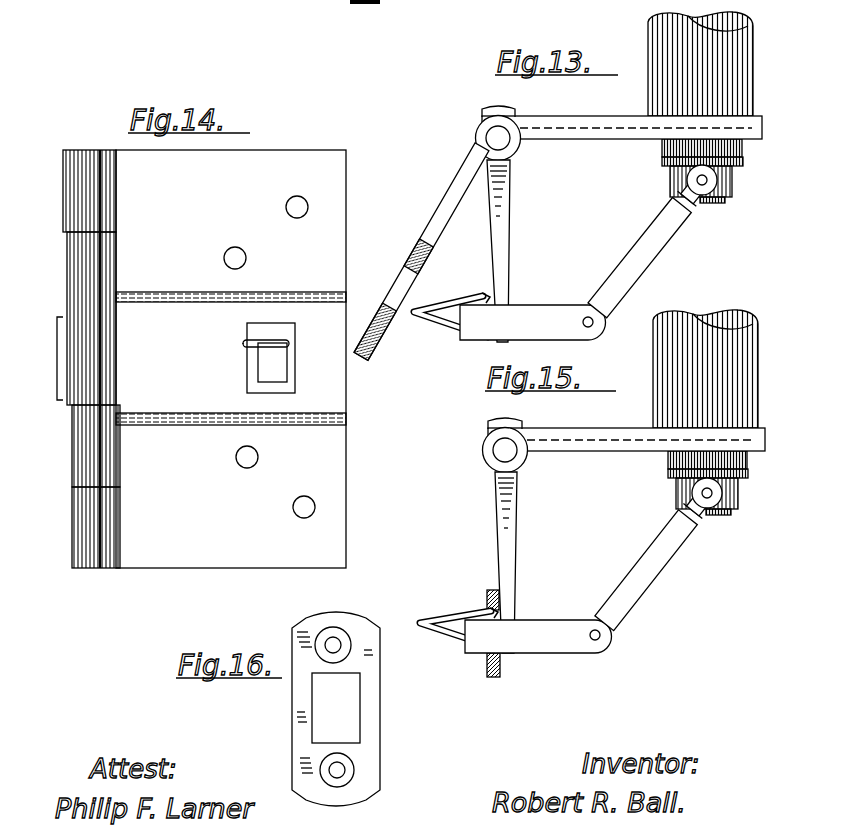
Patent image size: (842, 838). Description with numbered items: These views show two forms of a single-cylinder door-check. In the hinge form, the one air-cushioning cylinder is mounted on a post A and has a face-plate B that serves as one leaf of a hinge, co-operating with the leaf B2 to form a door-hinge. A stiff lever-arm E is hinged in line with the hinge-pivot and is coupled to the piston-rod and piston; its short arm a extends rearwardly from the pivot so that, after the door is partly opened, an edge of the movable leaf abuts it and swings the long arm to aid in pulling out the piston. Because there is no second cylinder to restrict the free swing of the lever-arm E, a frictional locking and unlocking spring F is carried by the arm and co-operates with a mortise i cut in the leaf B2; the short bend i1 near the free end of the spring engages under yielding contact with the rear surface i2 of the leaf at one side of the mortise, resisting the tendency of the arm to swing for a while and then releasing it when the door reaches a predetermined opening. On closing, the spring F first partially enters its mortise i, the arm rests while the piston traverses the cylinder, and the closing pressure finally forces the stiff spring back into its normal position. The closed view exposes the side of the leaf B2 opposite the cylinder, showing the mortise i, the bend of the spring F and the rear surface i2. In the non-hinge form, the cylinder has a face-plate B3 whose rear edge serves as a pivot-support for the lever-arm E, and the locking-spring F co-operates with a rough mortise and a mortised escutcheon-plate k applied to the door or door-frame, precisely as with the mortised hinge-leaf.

In FIG. 13, the post or standard A is at (700, 107).
In FIG. 15, the post or standard A is at (705, 412).
In FIG. 14, the short arm a is at (60, 319).
In FIG. 13, the short arm a is at (502, 113).
In FIG. 13, the face-plate B is at (607, 125).
In FIG. 14, the leaf B2 is at (204, 359).
In FIG. 13, the leaf B2 is at (421, 252).
In FIG. 15, the face-plate B3 is at (602, 445).
In FIG. 13, the lever-arm E is at (507, 251).
In FIG. 15, the lever-arm E is at (514, 562).
In FIG. 14, the locking-spring F is at (256, 350).
In FIG. 13, the locking-spring F is at (451, 303).
In FIG. 15, the locking-spring F is at (459, 617).
In FIG. 14, the mortise i is at (289, 334).
In FIG. 13, the mortise i is at (396, 300).
In FIG. 16, the mortise i is at (336, 708).
In FIG. 13, the short bend i1 is at (482, 286).
In FIG. 14, the rear surface i2 is at (247, 350).
In FIG. 13, the rear surface i2 is at (409, 271).
In FIG. 15, the escutcheon-plate k is at (487, 664).
In FIG. 16, the escutcheon-plate k is at (336, 709).